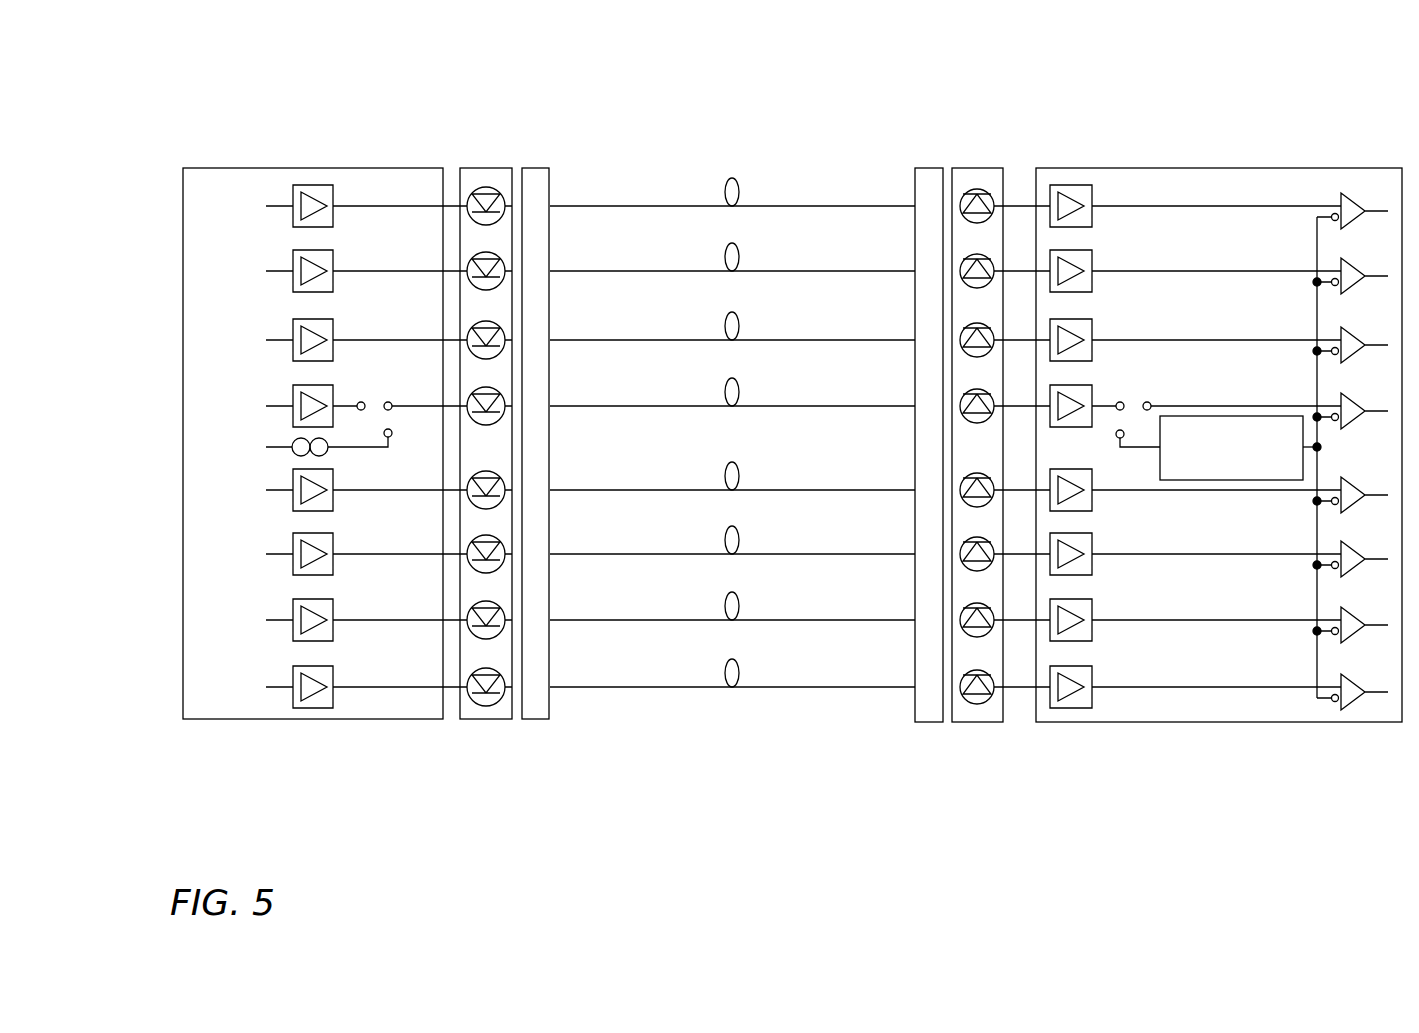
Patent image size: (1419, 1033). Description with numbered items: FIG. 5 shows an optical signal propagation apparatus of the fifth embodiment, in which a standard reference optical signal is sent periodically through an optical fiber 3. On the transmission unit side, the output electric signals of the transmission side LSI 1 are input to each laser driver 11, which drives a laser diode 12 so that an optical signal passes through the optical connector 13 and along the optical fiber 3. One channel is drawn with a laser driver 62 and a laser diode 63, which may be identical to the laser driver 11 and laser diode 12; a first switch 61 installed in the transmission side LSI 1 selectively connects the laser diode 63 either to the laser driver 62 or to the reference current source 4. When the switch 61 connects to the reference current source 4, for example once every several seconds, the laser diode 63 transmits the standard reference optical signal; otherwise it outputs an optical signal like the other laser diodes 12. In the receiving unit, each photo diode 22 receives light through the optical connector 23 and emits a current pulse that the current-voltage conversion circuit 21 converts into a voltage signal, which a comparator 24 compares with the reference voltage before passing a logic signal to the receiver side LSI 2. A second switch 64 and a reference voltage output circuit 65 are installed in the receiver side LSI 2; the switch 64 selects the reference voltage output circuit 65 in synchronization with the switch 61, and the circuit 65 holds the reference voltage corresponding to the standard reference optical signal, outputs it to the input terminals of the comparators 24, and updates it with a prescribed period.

The transmission side LSI 1 is at (368, 168).
The receiver side LSI 2 is at (1302, 168).
The optical fiber 3 is at (637, 203).
The reference current source 4 is at (296, 456).
The laser driver 11 is at (317, 708).
The laser diode 12 is at (483, 720).
The optical connector 13 is at (553, 125).
The current-voltage conversion circuit 21 is at (1067, 708).
The photo diode 22 is at (973, 707).
The optical connector 23 is at (947, 128).
The comparator 24 is at (1363, 743).
The first switch 61 is at (393, 413).
The laser driver 62 is at (293, 384).
The laser diode 63 is at (505, 413).
The second switch 64 is at (1135, 393).
The reference voltage output circuit 65 is at (1203, 480).